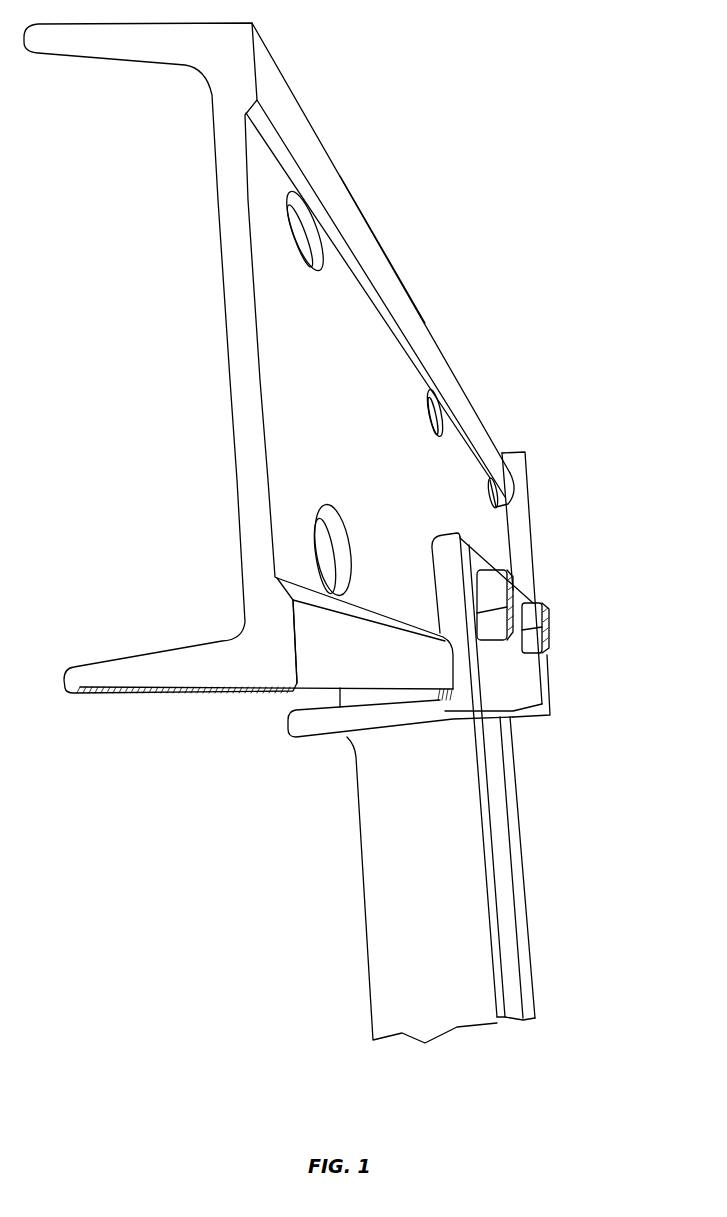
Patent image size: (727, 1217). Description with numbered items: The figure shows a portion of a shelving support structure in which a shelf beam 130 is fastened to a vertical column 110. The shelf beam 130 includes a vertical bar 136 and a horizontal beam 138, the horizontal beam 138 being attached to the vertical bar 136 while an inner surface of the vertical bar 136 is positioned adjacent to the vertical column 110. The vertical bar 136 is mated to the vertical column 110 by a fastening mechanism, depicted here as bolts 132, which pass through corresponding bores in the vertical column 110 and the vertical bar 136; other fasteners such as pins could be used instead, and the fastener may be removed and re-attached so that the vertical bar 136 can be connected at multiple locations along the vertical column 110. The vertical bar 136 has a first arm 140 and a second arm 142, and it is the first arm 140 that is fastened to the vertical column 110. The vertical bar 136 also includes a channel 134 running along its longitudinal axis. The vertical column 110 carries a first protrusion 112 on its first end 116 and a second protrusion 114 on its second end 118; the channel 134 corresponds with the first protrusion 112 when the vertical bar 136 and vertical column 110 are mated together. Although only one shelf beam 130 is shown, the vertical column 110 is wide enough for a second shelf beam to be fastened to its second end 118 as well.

The vertical column 110 is at (238, 512).
The first protrusion 112 is at (316, 648).
The second protrusion 114 is at (373, 257).
The first end 116 is at (330, 723).
The second end 118 is at (413, 298).
The shelf beam 130 is at (528, 777).
The bolts 132 is at (521, 591).
The channel 134 is at (445, 711).
The vertical bar 136 is at (548, 678).
The horizontal beam 138 is at (503, 860).
The first arm 140 is at (468, 557).
The second arm 142 is at (325, 689).